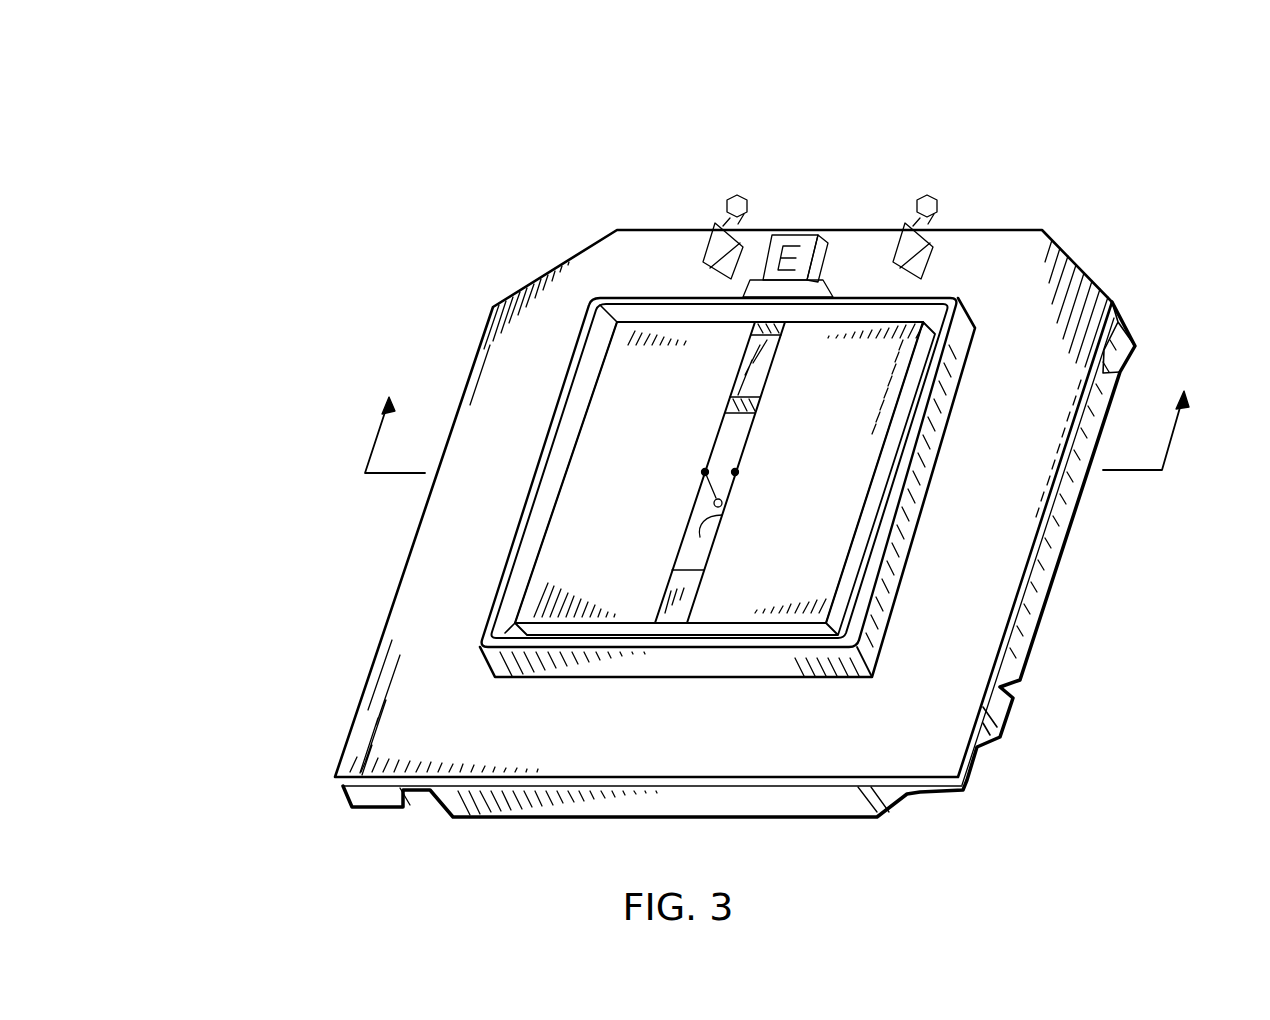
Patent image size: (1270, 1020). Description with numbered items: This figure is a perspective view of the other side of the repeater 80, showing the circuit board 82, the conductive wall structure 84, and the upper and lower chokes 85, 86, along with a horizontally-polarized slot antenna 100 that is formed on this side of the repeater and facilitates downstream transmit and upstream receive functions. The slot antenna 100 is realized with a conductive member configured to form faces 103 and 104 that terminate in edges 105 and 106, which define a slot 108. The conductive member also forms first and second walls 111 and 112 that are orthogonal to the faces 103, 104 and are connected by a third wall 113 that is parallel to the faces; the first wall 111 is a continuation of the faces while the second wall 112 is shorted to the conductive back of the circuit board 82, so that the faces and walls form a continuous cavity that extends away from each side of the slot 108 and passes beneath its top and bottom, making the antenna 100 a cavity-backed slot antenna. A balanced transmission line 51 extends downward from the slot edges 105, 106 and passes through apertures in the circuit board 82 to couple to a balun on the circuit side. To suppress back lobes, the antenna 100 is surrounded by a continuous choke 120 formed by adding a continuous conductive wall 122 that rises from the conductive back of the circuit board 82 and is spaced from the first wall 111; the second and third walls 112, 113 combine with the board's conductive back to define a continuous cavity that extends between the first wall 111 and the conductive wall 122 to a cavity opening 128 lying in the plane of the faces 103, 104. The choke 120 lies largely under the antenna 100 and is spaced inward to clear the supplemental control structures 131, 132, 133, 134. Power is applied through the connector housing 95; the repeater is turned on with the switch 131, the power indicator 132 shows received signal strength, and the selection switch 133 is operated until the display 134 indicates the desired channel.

The repeater 80 is at (452, 188).
The circuit board 82 is at (1040, 508).
The conductive wall structure 84 is at (1068, 494).
The upper choke 85 is at (1123, 345).
The lower choke 86 is at (1000, 700).
The connector housing 95 is at (368, 806).
The horizontally-polarized slot antenna 100 is at (685, 402).
The face 103 is at (568, 565).
The face 104 is at (812, 548).
The edge 105 is at (678, 565).
The edge 106 is at (727, 506).
The slot 108 is at (702, 503).
The balanced transmission line 51 is at (718, 478).
The first wall 111 is at (768, 336).
The second wall 112 is at (748, 408).
The third wall 113 is at (757, 367).
The choke 120 is at (638, 297).
The conductive wall 122 is at (648, 663).
The cavity opening 128 is at (567, 437).
The switch 131 is at (722, 211).
The power indicator 132 is at (833, 287).
The selection switch 133 is at (940, 218).
The display 134 is at (837, 258).